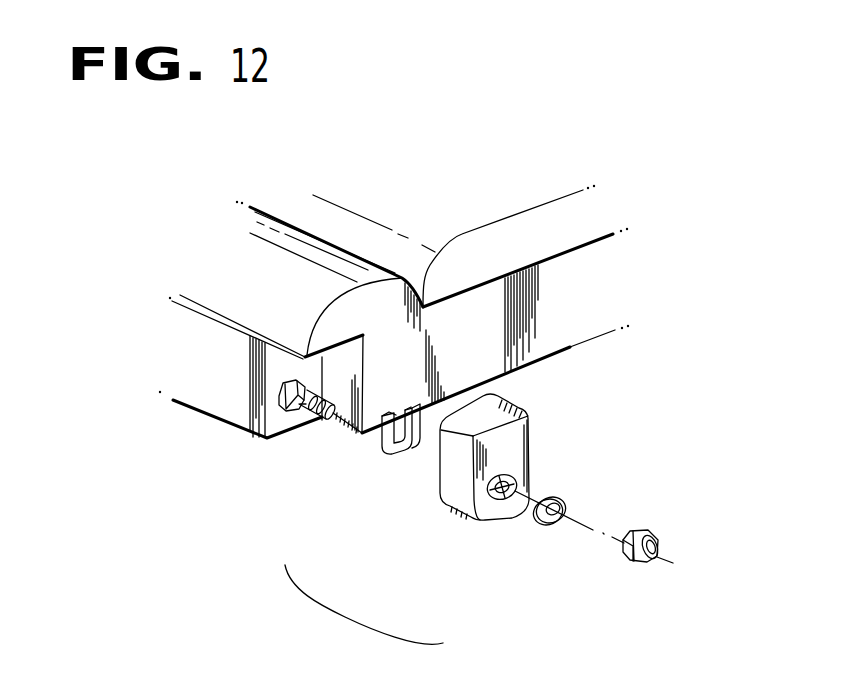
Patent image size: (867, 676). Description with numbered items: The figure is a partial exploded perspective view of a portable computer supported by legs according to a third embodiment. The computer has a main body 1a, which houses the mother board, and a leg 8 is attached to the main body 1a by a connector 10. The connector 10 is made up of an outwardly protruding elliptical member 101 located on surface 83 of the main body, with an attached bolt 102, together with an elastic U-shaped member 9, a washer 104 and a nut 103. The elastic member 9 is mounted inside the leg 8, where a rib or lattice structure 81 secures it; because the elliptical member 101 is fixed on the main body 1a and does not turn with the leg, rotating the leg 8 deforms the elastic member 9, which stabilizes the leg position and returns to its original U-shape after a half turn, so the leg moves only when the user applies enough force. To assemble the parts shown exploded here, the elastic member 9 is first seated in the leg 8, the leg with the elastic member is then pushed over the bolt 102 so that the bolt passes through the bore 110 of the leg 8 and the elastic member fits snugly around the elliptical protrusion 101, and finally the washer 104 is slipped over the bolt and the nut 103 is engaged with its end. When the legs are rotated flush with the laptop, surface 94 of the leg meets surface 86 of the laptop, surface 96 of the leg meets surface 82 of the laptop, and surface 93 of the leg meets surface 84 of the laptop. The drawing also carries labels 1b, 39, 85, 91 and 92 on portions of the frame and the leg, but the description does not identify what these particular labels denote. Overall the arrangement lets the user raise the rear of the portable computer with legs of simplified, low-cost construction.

The main body 1a is at (368, 270).
The second frame rail 1b is at (523, 233).
The leg 8 is at (453, 507).
The elastic U-shaped member 9 is at (387, 449).
The connector 10 is at (322, 608).
The frame post 39 is at (282, 368).
The rib 81 is at (335, 344).
The surface of the laptop 82 is at (548, 360).
The surface 83 is at (276, 418).
The surface of the laptop 84 is at (567, 292).
The end plate 85 is at (340, 390).
The surface of the laptop 86 is at (181, 363).
The top face of block 91 is at (488, 418).
The side face of block 92 is at (530, 440).
The surface of the leg 93 is at (497, 457).
The surface of the leg 94 is at (455, 464).
The surface of the leg 96 is at (498, 523).
The elliptical member 101 is at (283, 408).
The bolt 102 is at (293, 420).
The nut 103 is at (622, 557).
The washer 104 is at (537, 513).
The bore 110 is at (515, 484).